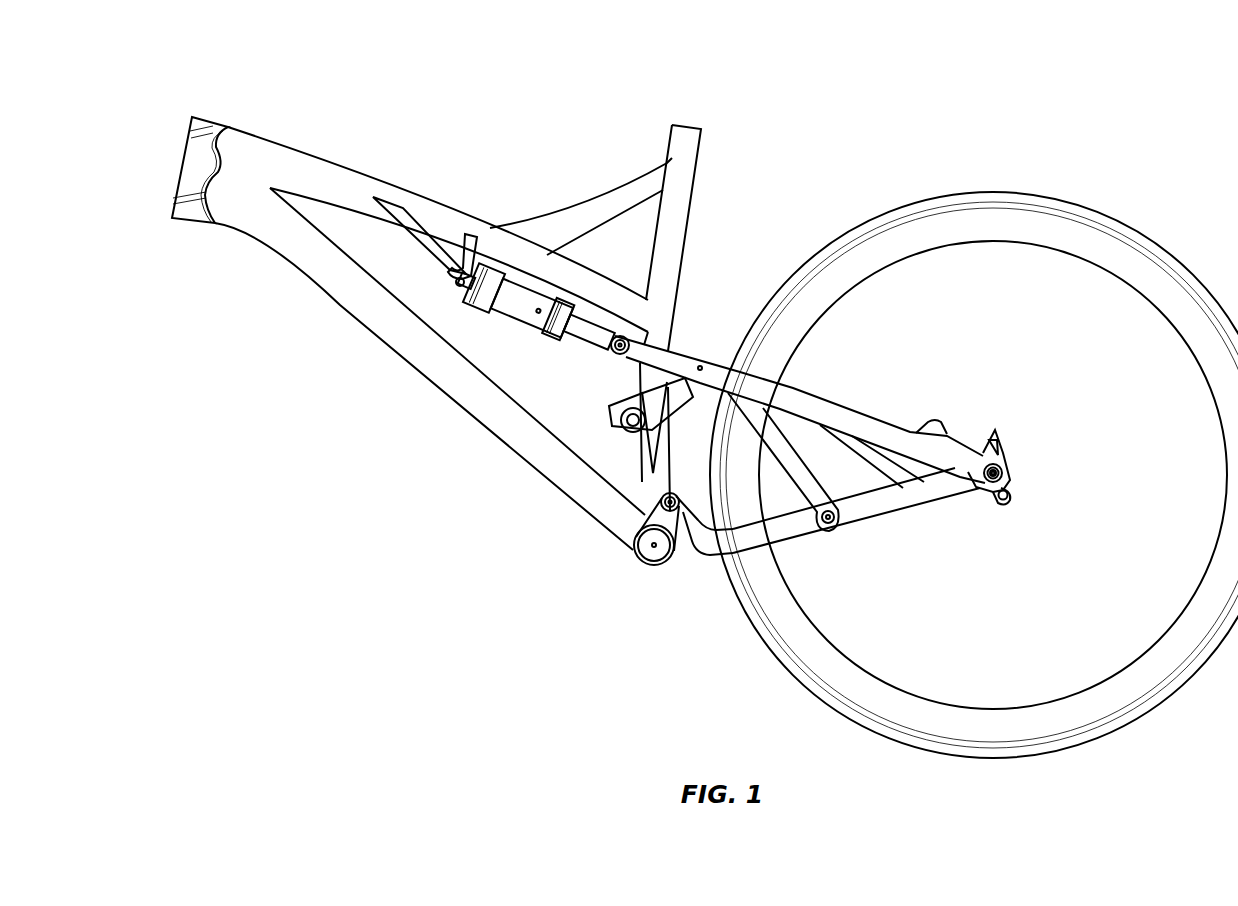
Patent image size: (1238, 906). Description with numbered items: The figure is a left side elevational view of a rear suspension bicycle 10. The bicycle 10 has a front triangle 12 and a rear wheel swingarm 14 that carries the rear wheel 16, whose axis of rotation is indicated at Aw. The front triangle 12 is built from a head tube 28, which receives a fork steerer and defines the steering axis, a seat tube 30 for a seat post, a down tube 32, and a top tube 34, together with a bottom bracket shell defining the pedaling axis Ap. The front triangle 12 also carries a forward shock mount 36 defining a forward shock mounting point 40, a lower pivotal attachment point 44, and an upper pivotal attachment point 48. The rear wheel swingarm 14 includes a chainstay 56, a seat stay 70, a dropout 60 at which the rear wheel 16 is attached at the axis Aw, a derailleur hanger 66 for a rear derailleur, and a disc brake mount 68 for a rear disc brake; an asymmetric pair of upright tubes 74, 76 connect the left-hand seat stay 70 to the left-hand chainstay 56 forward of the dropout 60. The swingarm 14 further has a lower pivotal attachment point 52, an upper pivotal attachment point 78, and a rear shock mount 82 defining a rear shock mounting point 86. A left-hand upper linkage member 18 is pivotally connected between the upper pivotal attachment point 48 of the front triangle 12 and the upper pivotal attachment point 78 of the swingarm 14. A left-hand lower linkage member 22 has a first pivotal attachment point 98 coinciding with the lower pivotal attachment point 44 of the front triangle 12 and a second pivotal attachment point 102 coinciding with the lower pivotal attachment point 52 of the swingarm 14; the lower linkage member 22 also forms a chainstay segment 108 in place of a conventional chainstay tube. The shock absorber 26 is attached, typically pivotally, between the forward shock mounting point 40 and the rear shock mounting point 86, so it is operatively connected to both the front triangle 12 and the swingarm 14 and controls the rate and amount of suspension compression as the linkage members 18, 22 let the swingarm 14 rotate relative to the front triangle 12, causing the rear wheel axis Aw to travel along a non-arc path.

The bicycle 10 is at (168, 77).
The front triangle 12 is at (370, 441).
The rear wheel swingarm 14 is at (815, 186).
The rear wheel 16 is at (993, 192).
The left-hand upper linkage member 18 is at (672, 408).
The left-hand lower linkage member 22 is at (702, 560).
The shock absorber 26 is at (520, 323).
The head tube 28 is at (190, 160).
The seat tube 30 is at (698, 162).
The down tube 32 is at (336, 300).
The top tube 34 is at (308, 152).
The forward shock mount 36 is at (414, 236).
The forward shock mounting point 40 is at (456, 283).
The lower pivotal attachment point 44 is at (650, 497).
The upper pivotal attachment point 48 is at (621, 421).
The lower pivotal attachment point 52 is at (838, 520).
The chainstay 56 is at (908, 512).
The dropout 60 is at (993, 488).
The derailleur hanger 66 is at (1011, 498).
The disc brake mount 68 is at (995, 428).
The seat stay 70 is at (850, 395).
The upright tube 74 is at (803, 470).
The upright tube 76 is at (882, 466).
The upper pivotal attachment point 78 is at (700, 366).
The rear shock mount 82 is at (617, 357).
The rear shock mounting point 86 is at (611, 346).
The first pivotal attachment point 98 is at (681, 500).
The second pivotal attachment point 102 is at (832, 524).
The chainstay segment 108 is at (795, 550).
The pedaling axis Ap is at (653, 545).
The rear wheel axis of rotation Aw is at (1006, 471).